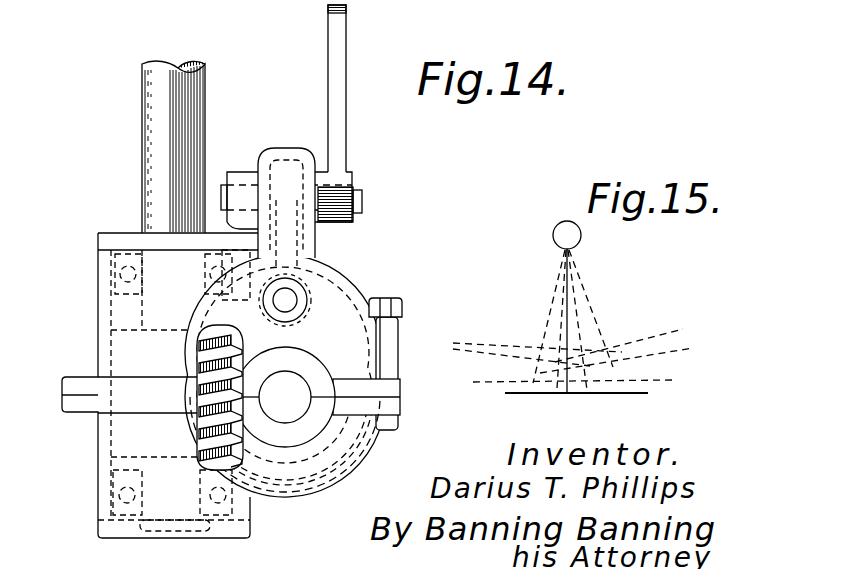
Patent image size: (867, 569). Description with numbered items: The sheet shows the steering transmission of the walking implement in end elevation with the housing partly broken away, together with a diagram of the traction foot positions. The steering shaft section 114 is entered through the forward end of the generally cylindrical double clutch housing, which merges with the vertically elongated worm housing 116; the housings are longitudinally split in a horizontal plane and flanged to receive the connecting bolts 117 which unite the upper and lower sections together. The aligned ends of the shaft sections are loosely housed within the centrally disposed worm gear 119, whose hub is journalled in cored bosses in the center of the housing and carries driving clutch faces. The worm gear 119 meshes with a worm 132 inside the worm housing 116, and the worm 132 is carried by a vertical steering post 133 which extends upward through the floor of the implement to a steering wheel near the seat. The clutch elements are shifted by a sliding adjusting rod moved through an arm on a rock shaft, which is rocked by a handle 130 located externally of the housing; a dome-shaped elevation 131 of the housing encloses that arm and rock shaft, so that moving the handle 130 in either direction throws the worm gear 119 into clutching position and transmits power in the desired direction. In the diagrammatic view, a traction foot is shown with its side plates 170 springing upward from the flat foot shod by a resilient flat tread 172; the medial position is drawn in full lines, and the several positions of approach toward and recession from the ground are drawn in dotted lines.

In FIG. 14, the shaft section 114 is at (308, 408).
In FIG. 14, the worm housing 116 is at (103, 322).
In FIG. 14, the connecting bolts 117 is at (402, 303).
In FIG. 14, the worm gear 119 is at (238, 410).
In FIG. 14, the handle 130 is at (330, 36).
In FIG. 14, the dome-shaped elevation 131 is at (278, 152).
In FIG. 14, the worm 132 is at (200, 380).
In FIG. 14, the vertical steering post 133 is at (141, 186).
In FIG. 15, the side plates 170 is at (567, 335).
In FIG. 15, the flat tread 172 is at (638, 393).